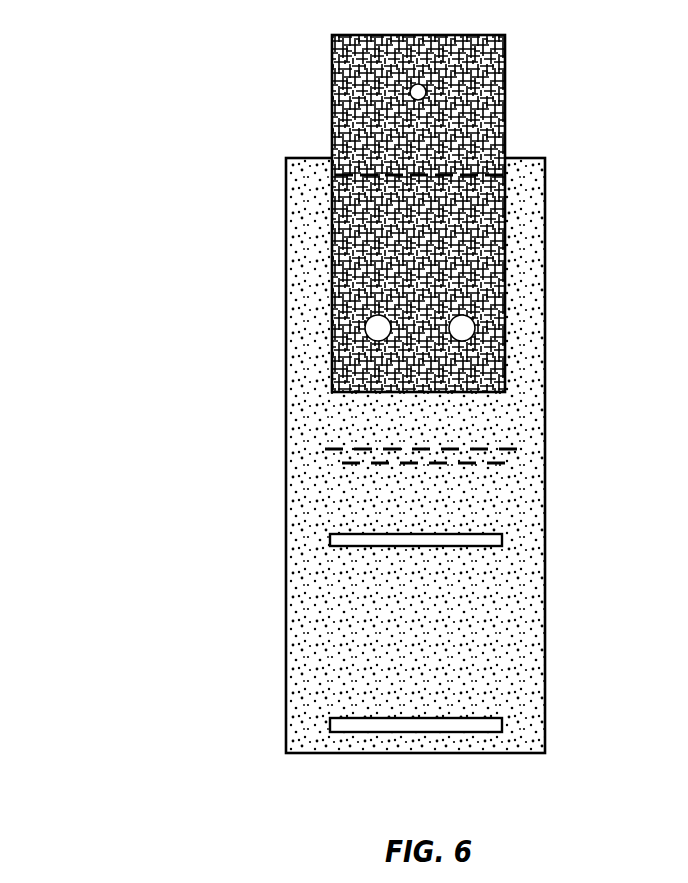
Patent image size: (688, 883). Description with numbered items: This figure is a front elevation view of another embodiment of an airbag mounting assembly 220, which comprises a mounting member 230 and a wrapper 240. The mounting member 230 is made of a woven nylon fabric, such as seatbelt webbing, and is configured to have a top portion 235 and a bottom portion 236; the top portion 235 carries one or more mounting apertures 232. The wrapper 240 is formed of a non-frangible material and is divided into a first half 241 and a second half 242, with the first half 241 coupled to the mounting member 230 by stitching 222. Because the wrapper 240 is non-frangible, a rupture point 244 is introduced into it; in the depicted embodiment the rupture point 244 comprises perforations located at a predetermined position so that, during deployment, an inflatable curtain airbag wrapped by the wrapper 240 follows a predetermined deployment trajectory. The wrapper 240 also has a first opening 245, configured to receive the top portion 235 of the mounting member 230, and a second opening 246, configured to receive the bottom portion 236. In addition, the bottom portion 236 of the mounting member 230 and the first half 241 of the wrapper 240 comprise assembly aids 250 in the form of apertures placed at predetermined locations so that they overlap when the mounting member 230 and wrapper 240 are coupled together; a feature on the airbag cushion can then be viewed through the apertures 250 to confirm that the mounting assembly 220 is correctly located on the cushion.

The mounting assembly 220 is at (138, 210).
The mounting member 230 is at (312, 47).
The mounting apertures 232 is at (424, 89).
The top portion 235 is at (352, 89).
The bottom portion 236 is at (348, 367).
The stitching 222 is at (368, 173).
The wrapper 240 is at (238, 329).
The first half 241 is at (280, 243).
The second half 242 is at (275, 627).
The rupture point 244 is at (415, 466).
The first opening 245 is at (358, 546).
The second opening 246 is at (360, 718).
The assembly aids 250 is at (470, 323).